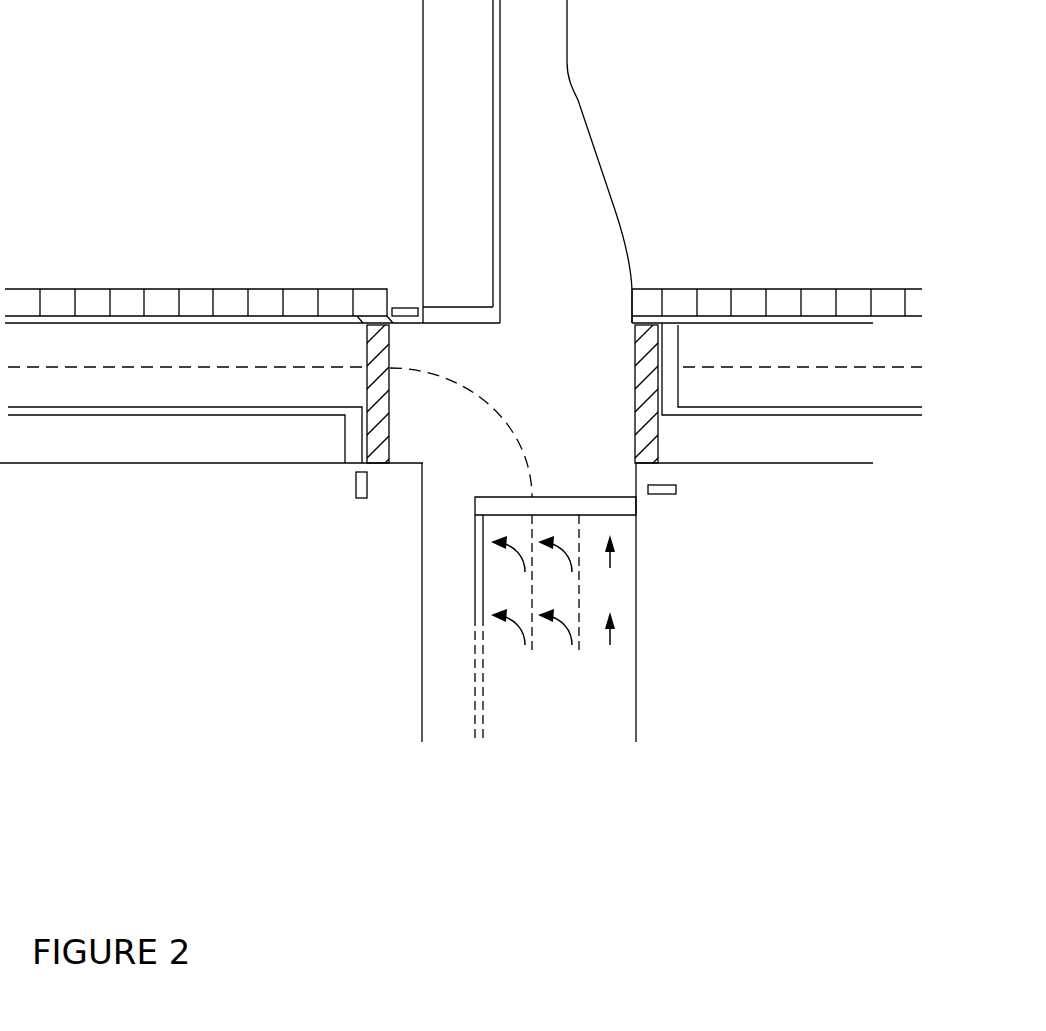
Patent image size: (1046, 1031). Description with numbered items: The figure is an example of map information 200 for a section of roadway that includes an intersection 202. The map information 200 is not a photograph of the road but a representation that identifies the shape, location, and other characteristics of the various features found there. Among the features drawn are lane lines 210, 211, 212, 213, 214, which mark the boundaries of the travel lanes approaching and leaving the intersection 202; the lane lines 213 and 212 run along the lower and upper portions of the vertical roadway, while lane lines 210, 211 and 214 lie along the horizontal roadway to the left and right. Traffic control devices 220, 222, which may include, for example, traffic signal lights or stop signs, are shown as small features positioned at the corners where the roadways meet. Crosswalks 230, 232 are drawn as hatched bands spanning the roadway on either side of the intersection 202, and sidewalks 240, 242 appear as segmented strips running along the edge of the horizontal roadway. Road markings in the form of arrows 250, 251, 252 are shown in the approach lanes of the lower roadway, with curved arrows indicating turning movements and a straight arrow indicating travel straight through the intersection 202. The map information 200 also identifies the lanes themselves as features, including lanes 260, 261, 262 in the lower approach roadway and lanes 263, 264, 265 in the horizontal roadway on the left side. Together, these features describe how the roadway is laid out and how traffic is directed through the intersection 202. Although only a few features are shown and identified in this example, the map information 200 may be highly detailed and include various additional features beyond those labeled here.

The map information 200 is at (92, 912).
The intersection 202 is at (511, 248).
The lane line 210 is at (160, 362).
The lane line 211 is at (232, 412).
The lane line 212 is at (475, 728).
The lane line 213 is at (493, 122).
The lane line 214 is at (770, 407).
The traffic control device 220 is at (677, 493).
The traffic control device 222 is at (393, 308).
The crosswalk 230 is at (367, 352).
The crosswalk 232 is at (660, 325).
The sidewalk 240 is at (753, 289).
The sidewalk 242 is at (240, 290).
The arrow 250 is at (475, 612).
The arrow 251 is at (565, 627).
The arrow 252 is at (613, 633).
The lane 260 is at (508, 590).
The lane 261 is at (557, 590).
The lane 262 is at (608, 590).
The lane 263 is at (288, 438).
The lane 264 is at (288, 388).
The lane 265 is at (288, 346).